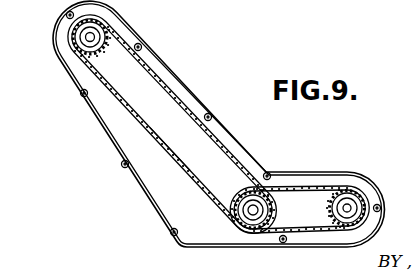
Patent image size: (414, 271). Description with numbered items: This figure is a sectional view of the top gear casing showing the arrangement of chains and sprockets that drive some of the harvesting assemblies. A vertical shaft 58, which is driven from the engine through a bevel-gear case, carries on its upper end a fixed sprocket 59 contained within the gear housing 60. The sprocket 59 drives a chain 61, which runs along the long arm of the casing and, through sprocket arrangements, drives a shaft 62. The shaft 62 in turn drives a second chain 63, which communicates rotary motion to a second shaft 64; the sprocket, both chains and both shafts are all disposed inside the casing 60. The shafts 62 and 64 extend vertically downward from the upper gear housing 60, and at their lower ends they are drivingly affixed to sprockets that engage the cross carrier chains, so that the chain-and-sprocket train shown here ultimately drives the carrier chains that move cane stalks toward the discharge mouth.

The vertical shaft 58 is at (88, 39).
The sprocket 59 is at (101, 46).
The gear housing 60 is at (166, 64).
The chain 61 is at (171, 146).
The shaft 62 is at (252, 213).
The chain 63 is at (313, 197).
The second shaft 64 is at (349, 207).